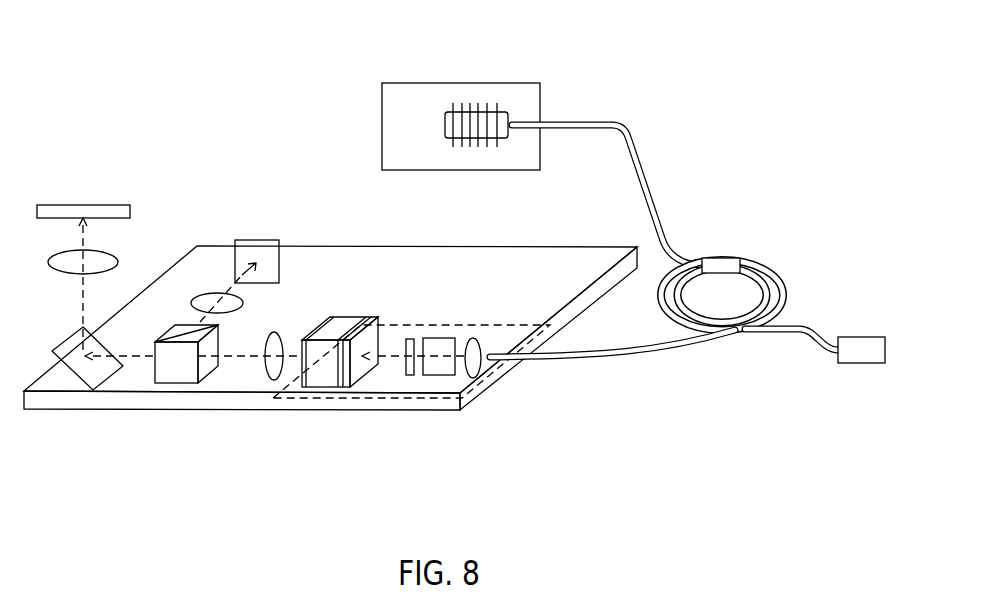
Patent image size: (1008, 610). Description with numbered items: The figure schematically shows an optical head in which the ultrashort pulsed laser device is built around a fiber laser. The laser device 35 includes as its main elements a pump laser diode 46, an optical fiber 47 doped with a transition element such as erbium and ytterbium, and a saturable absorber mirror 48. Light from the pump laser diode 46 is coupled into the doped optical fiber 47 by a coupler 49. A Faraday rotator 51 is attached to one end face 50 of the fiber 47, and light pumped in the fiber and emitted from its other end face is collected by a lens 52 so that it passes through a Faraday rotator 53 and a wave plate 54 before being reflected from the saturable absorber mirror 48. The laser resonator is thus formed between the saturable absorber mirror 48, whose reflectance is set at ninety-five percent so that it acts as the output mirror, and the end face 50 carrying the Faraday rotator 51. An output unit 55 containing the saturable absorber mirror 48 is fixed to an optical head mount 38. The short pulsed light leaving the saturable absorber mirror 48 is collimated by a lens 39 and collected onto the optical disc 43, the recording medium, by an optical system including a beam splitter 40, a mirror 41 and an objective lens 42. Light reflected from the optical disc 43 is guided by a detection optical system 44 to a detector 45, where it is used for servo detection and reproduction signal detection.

The laser light source 35 is at (382, 125).
The optical head mount 38 is at (128, 410).
The lens 39 is at (267, 380).
The beam splitter 40 is at (177, 378).
The mirror 41 is at (77, 390).
The objective lens 42 is at (118, 260).
The optical disc 43 is at (108, 204).
The detection optical system 44 is at (217, 293).
The detector 45 is at (260, 240).
The pump laser diode 46 is at (453, 112).
The optical fiber 47 is at (783, 282).
The saturable absorber mirror 48 is at (347, 317).
The coupler 49 is at (725, 258).
The end face 50 is at (885, 340).
The Faraday rotator 51 is at (862, 363).
The lens 52 is at (472, 338).
The Faraday rotator 53 is at (438, 376).
The wave plate 54 is at (410, 376).
The output unit 55 is at (407, 325).